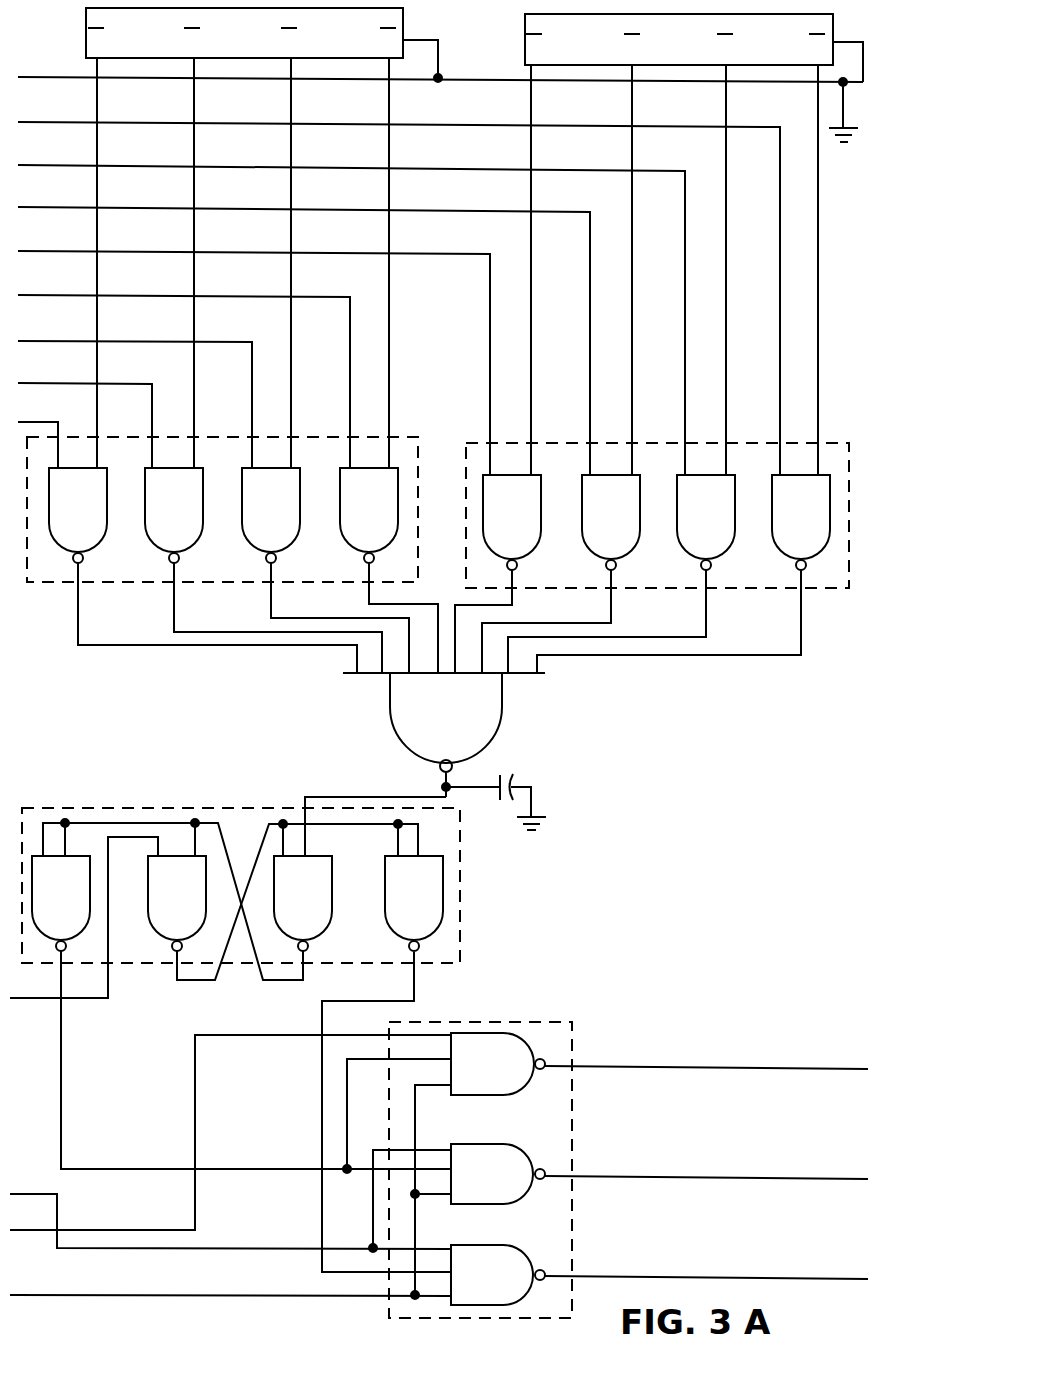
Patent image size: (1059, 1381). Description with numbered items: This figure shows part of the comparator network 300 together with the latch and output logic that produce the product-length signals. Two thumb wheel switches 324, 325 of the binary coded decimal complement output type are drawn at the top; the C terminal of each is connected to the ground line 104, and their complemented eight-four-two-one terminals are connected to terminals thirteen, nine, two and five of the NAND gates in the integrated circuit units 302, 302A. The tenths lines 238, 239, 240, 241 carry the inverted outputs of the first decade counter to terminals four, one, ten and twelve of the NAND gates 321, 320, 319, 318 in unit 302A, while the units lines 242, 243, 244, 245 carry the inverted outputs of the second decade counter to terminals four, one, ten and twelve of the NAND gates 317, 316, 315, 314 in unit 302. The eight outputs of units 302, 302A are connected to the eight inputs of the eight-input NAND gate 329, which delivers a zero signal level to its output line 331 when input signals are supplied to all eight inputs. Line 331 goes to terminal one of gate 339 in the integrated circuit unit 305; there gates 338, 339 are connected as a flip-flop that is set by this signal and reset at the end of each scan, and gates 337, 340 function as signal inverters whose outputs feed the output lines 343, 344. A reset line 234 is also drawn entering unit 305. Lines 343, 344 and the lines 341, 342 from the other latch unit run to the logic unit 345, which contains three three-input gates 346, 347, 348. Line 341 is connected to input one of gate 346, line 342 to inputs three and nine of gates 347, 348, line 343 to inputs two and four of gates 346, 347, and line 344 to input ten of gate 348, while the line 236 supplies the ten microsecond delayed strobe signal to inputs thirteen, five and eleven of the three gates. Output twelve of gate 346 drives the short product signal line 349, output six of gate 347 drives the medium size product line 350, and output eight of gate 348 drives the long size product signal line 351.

The thumb wheel switch 324 is at (252, 238).
The thumb wheel switch 325 is at (688, 244).
The ground line 104 is at (470, 62).
The tenths line 238 is at (74, 124).
The tenths line 239 is at (74, 167).
The tenths line 240 is at (74, 209).
The tenths line 241 is at (74, 253).
The units line 242 is at (74, 297).
The units line 243 is at (74, 343).
The units line 244 is at (74, 385).
The units line 245 is at (66, 418).
The comparator network 300 is at (457, 298).
The integrated circuit unit 302 is at (426, 422).
The integrated circuit unit 302A is at (563, 422).
The NAND gate 314 is at (75, 523).
The NAND gate 315 is at (174, 523).
The NAND gate 316 is at (271, 523).
The NAND gate 317 is at (369, 523).
The NAND gate 318 is at (509, 530).
The NAND gate 319 is at (611, 530).
The NAND gate 320 is at (706, 530).
The NAND gate 321 is at (801, 530).
The eight-input NAND gate 329 is at (494, 736).
The output line 331 is at (335, 795).
The integrated circuit unit 305 is at (48, 802).
The gate 337 is at (61, 909).
The gate 338 is at (176, 909).
The gate 339 is at (303, 909).
The gate 340 is at (414, 909).
The reset line 234 is at (110, 972).
The output line 344 is at (384, 999).
The output line 343 is at (61, 1073).
The output line 341 is at (195, 1098).
The output line 342 is at (205, 1246).
The line 236 is at (134, 1296).
The logic unit 345 is at (606, 1003).
The gate 346 is at (505, 1064).
The gate 347 is at (504, 1173).
The gate 348 is at (504, 1274).
The short product signal line 349 is at (850, 1070).
The medium size product line 350 is at (852, 1180).
The long size product signal line 351 is at (855, 1279).